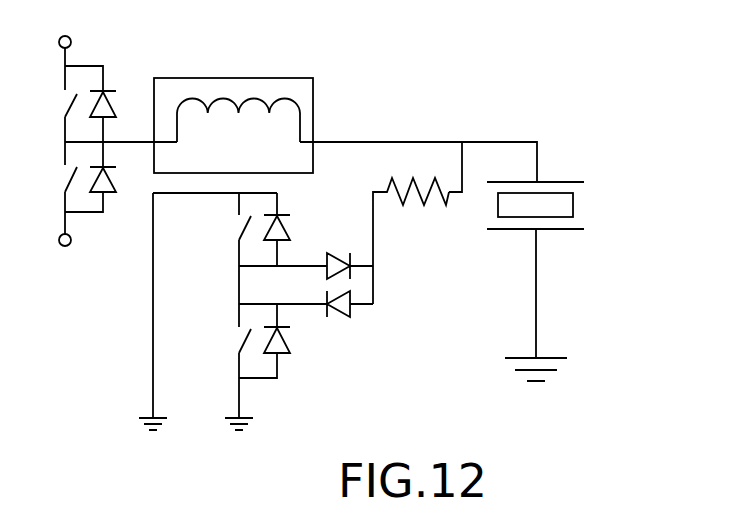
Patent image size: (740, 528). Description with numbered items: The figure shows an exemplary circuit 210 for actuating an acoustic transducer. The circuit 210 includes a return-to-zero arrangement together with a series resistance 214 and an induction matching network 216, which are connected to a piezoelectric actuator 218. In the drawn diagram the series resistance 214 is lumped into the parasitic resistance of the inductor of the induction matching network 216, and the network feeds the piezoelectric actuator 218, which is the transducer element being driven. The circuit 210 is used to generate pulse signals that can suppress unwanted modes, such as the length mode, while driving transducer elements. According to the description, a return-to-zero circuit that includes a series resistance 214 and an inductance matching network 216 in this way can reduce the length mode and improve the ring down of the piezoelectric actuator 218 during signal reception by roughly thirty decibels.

The circuit 210 is at (482, 92).
The series resistance 214 is at (410, 308).
The induction matching network 216 is at (232, 78).
The piezoelectric actuator 218 is at (557, 198).